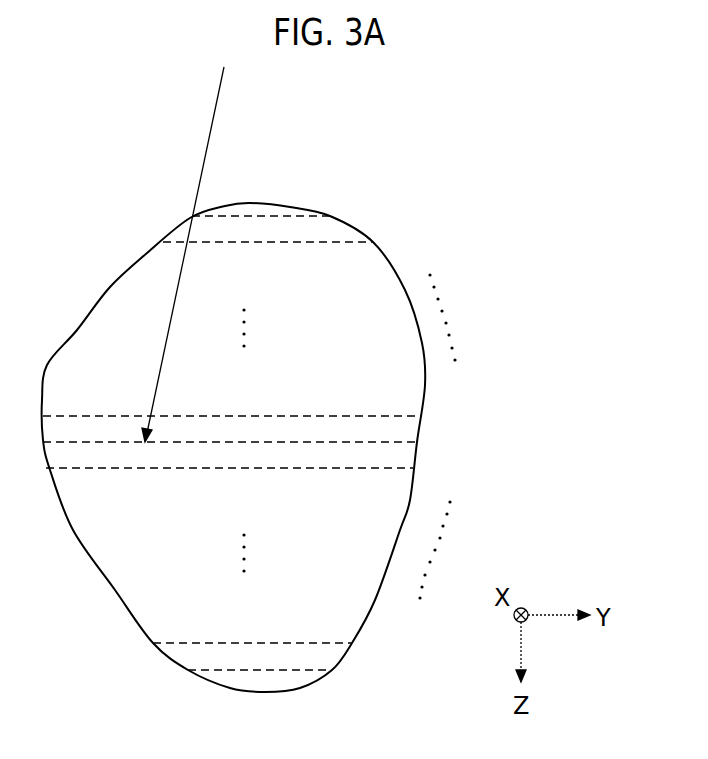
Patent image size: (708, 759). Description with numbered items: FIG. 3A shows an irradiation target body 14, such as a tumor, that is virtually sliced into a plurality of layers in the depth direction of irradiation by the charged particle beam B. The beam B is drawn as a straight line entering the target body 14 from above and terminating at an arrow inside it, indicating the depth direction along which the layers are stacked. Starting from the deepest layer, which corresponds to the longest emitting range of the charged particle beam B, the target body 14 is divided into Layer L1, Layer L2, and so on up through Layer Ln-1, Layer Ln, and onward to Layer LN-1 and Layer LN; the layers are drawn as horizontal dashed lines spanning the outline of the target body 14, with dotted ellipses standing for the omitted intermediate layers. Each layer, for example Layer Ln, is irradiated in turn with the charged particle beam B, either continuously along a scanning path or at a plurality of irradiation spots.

The workpiece 14 is at (107, 258).
The charged particle beam B is at (201, 155).
The Layer LN is at (262, 214).
The Layer LN-1 is at (336, 243).
The Layer Ln is at (388, 442).
The Layer Ln-1 is at (372, 468).
The Layer L2 is at (327, 643).
The Layer L1 is at (300, 670).